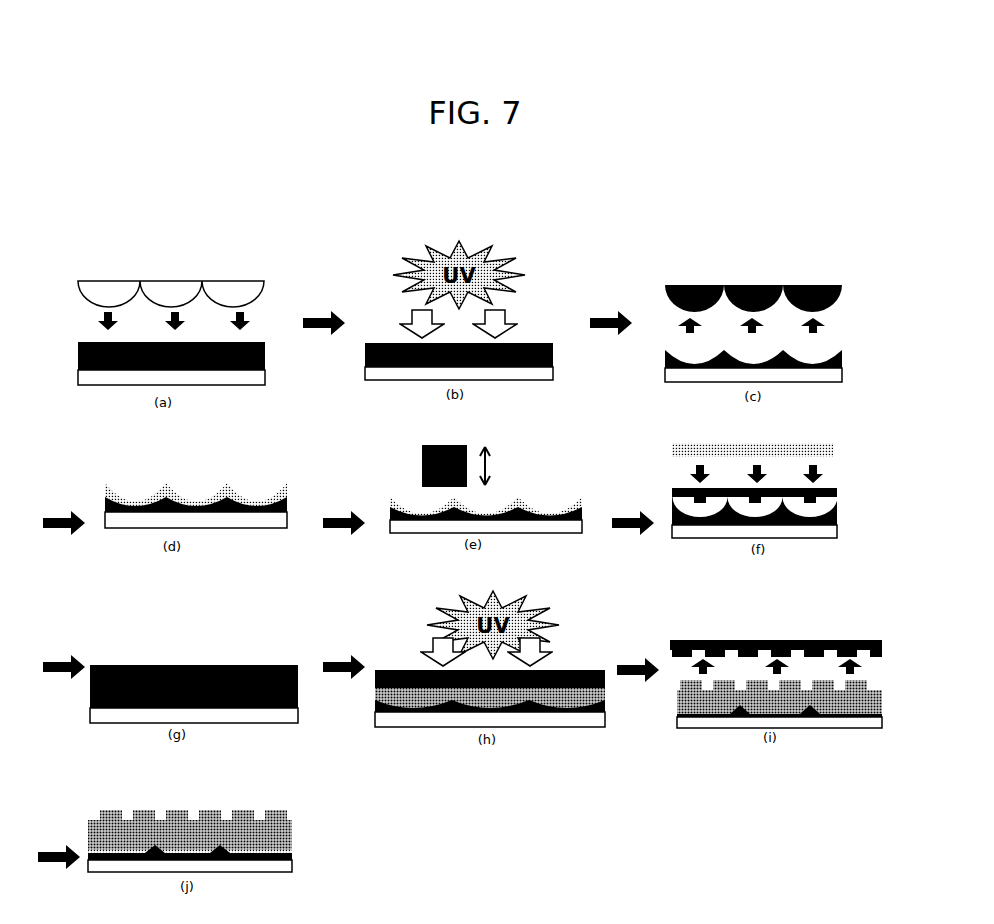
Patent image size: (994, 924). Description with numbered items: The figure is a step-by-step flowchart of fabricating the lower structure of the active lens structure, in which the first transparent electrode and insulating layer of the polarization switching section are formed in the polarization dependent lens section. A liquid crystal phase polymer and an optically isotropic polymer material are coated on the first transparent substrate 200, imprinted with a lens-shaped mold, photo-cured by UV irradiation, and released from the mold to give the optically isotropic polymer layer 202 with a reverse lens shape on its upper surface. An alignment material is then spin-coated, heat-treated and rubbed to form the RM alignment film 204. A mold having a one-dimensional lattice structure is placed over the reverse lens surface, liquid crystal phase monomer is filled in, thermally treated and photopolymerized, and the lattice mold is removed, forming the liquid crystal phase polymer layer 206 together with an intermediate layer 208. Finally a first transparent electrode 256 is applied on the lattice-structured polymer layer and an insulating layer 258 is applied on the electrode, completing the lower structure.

The first transparent substrate 200 is at (265, 377).
The optically isotropic polymer layer 202 is at (842, 362).
The RM alignment film 204 is at (285, 492).
The liquid crystal phase polymer layer 206 is at (677, 700).
The resin pattern layer 208 is at (292, 835).
The first transparent electrode 256 is at (292, 824).
The insulating layer 258 is at (288, 814).